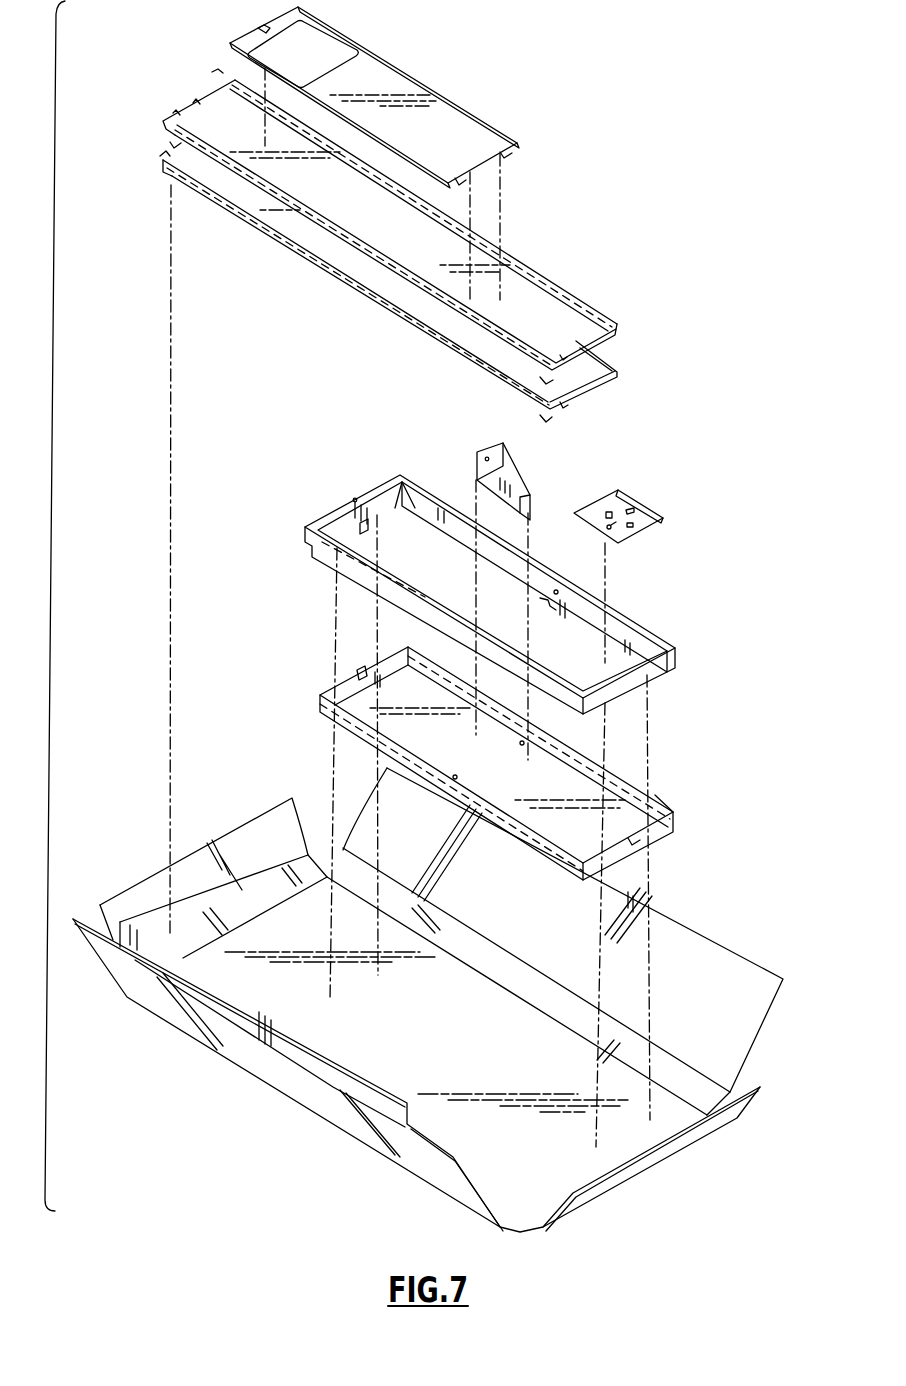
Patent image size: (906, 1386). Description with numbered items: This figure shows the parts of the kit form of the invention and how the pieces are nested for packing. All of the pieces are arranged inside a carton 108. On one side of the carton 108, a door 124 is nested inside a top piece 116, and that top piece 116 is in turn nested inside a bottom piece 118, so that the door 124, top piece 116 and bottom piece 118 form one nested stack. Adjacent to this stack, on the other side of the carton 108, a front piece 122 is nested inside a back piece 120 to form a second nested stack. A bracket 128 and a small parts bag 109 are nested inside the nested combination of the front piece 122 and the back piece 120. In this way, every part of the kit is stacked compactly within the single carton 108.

The carton 108 is at (710, 972).
The small parts bag 109 is at (660, 512).
The top piece 116 is at (620, 326).
The bottom piece 118 is at (603, 383).
The back piece 120 is at (675, 822).
The front piece 122 is at (667, 635).
The door 124 is at (444, 127).
The bracket 128 is at (531, 492).